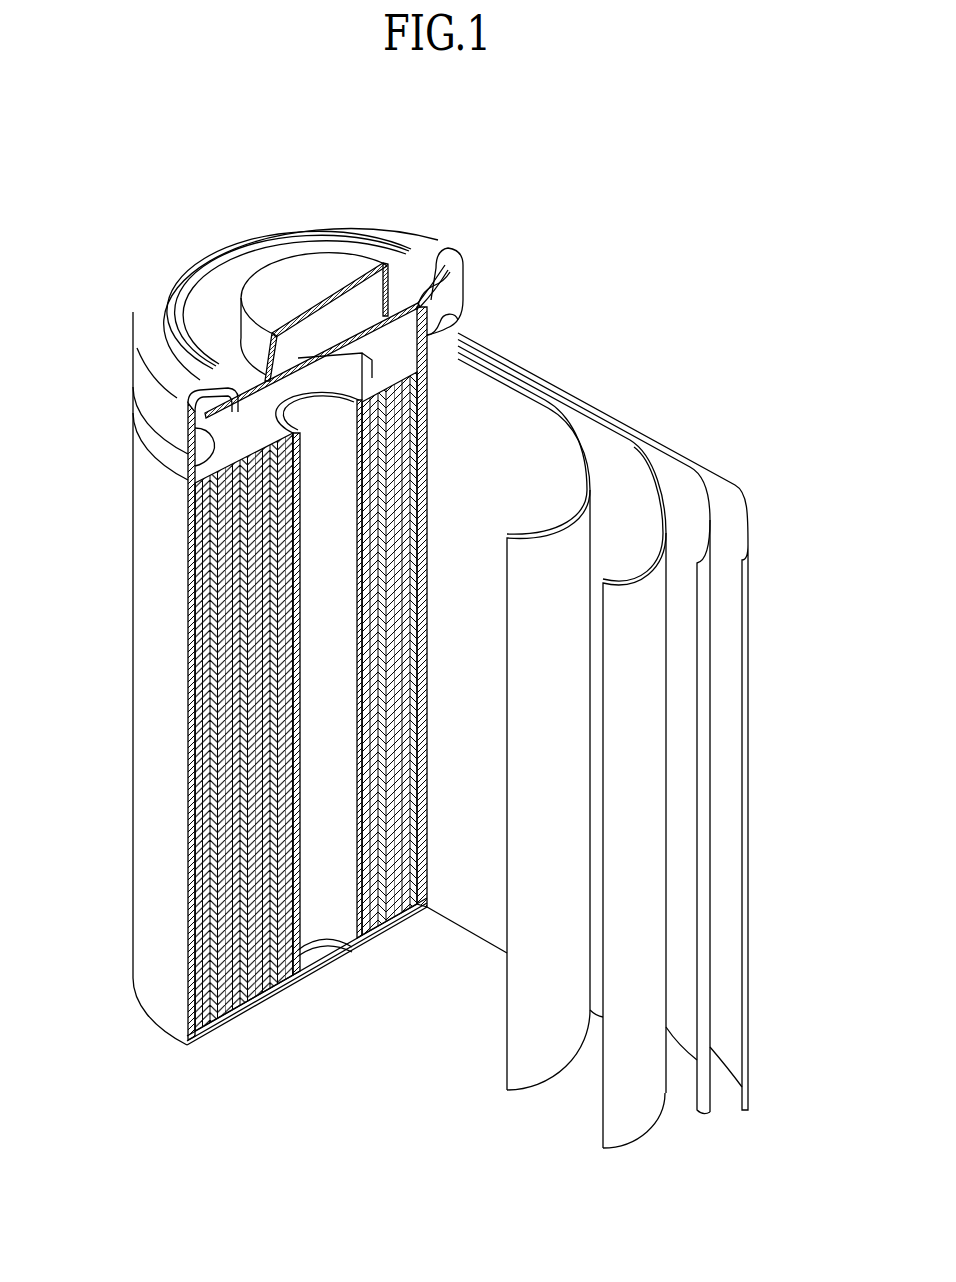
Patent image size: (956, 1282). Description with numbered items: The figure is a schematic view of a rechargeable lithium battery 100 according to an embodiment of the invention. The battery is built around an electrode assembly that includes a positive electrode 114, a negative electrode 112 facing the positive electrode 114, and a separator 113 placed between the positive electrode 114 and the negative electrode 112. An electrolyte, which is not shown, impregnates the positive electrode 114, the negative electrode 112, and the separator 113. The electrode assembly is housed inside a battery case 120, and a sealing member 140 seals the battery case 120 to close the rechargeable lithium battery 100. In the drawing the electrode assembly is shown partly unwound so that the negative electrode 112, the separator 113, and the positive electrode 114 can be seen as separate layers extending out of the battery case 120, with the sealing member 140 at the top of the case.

The rechargeable lithium battery 100 is at (529, 209).
The negative electrode 112 is at (748, 535).
The separator 113 is at (544, 425).
The positive electrode 114 is at (628, 480).
The battery case 120 is at (148, 633).
The sealing member 140 is at (266, 283).